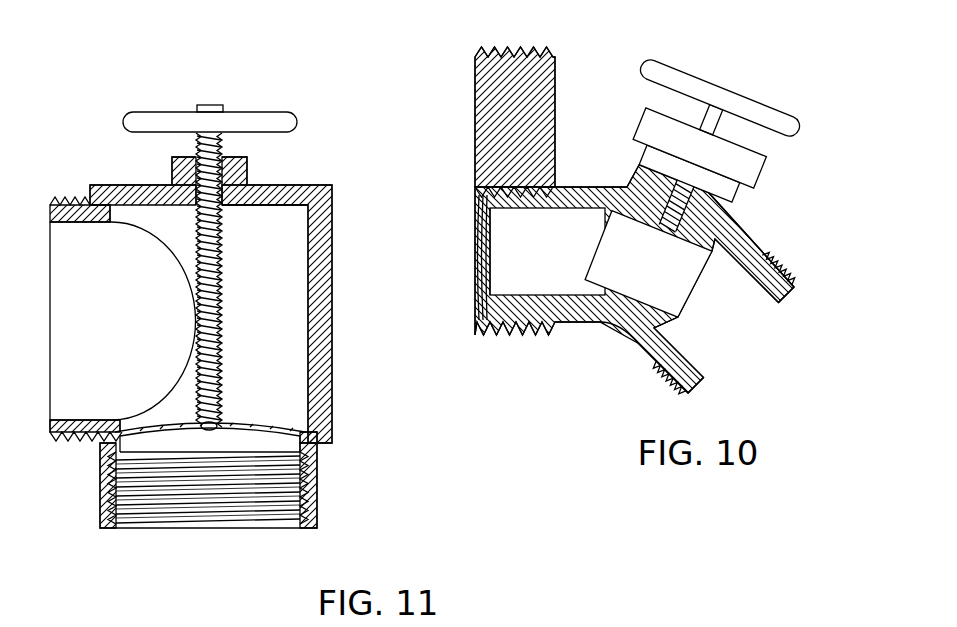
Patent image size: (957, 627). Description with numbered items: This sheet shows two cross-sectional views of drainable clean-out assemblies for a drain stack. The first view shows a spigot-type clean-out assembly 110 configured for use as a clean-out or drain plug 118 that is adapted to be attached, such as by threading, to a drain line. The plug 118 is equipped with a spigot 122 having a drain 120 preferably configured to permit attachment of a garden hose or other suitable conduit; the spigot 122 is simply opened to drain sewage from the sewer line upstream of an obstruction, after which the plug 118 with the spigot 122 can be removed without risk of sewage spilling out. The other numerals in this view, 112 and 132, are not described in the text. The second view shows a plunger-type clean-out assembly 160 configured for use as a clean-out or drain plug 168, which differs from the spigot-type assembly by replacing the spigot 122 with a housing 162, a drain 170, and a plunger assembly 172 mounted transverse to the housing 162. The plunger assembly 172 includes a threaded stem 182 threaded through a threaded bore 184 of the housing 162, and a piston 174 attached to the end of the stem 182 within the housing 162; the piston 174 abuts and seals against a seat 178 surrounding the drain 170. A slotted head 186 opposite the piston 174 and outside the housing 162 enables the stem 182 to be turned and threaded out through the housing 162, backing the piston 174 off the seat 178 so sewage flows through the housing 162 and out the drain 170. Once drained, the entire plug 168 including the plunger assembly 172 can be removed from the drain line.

In FIG. 10, the clean-out assembly 110 is at (777, 199).
In FIG. 10, the valve body 112 is at (574, 320).
In FIG. 10, the drain plug 118 is at (478, 130).
In FIG. 10, the drain 120 is at (797, 288).
In FIG. 10, the spigot 122 is at (770, 249).
In FIG. 10, the handle 132 is at (732, 93).
In FIG. 11, the clean-out assembly 160 is at (372, 357).
In FIG. 11, the housing 162 is at (130, 188).
In FIG. 11, the drain plug 168 is at (286, 175).
In FIG. 11, the drain 170 is at (102, 480).
In FIG. 11, the plunger assembly 172 is at (155, 304).
In FIG. 11, the piston 174 is at (177, 420).
In FIG. 11, the seat 178 is at (305, 440).
In FIG. 11, the threaded stem 182 is at (195, 330).
In FIG. 11, the threaded bore 184 is at (227, 193).
In FIG. 11, the slotted head 186 is at (172, 110).